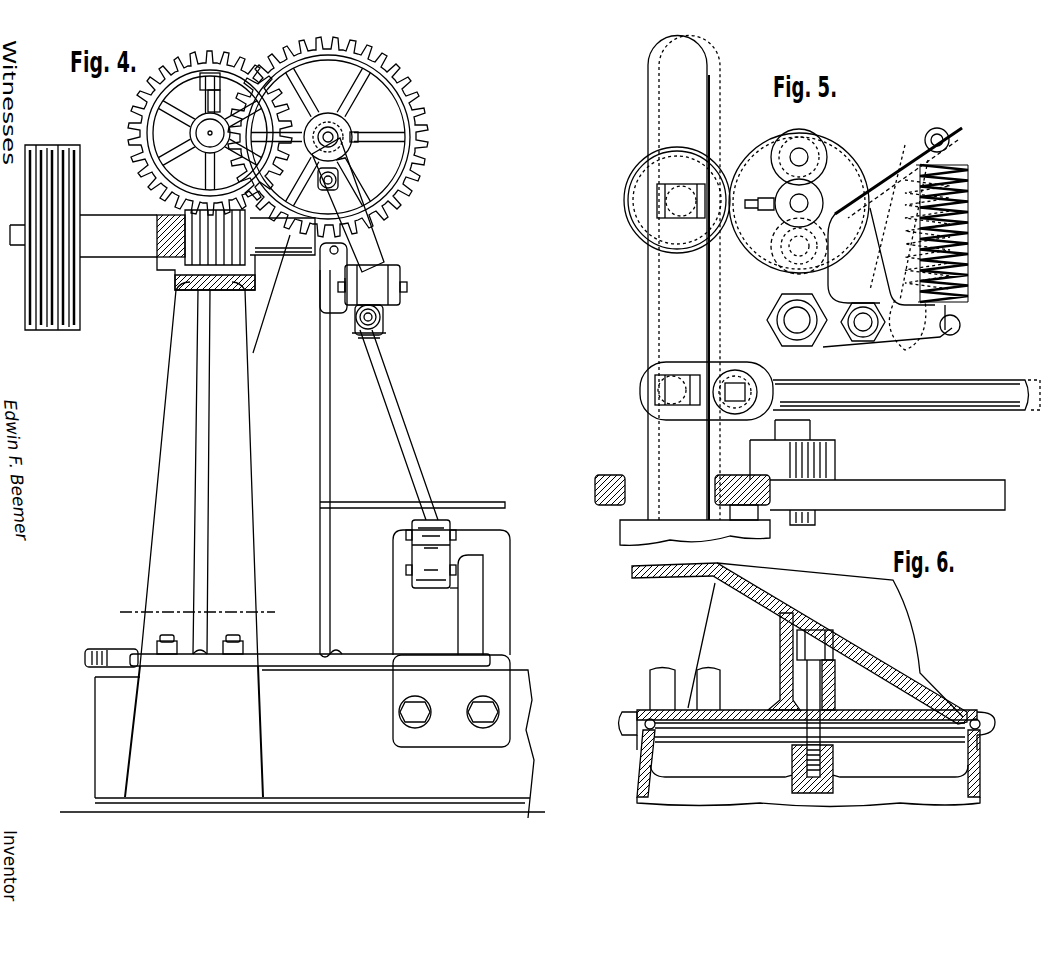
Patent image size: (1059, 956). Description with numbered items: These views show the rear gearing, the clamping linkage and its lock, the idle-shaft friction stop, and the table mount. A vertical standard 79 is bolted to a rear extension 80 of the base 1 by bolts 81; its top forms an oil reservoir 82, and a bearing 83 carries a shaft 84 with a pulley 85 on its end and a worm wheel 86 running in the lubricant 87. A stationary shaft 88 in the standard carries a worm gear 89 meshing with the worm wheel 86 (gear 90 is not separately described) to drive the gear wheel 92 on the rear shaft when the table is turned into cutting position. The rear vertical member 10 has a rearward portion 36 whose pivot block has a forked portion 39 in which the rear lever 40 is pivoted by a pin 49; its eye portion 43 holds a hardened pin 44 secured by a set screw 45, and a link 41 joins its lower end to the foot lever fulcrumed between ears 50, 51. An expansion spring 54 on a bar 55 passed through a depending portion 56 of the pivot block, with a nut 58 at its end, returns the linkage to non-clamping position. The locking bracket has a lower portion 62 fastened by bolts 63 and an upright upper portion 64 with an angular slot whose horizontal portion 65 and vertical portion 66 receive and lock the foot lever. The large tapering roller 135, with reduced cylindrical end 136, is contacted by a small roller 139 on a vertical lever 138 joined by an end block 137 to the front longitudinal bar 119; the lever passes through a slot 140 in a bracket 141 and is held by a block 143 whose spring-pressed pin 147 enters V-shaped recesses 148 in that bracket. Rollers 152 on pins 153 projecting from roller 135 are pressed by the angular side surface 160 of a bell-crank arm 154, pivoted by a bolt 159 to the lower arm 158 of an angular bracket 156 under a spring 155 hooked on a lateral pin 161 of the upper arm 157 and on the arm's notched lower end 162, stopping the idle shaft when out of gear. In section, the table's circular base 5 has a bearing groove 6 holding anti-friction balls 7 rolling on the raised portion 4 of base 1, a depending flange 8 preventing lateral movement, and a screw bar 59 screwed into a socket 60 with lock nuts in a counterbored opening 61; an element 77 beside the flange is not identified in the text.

In FIG. 4, the base 1 is at (302, 744).
In FIG. 6, the base 1 is at (808, 768).
In FIG. 6, the rods 4 is at (965, 740).
In FIG. 4, the plate 5 is at (345, 660).
In FIG. 6, the plate 5 is at (985, 712).
In FIG. 6, the boss 6 is at (622, 722).
In FIG. 6, the lugs 7 is at (975, 712).
In FIG. 4, the bar 8 is at (342, 667).
In FIG. 6, the bar 8 is at (995, 735).
In FIG. 4, the frame 10 is at (268, 450).
In FIG. 6, the frame 10 is at (799, 643).
In FIG. 4, the lever 36 is at (330, 290).
In FIG. 4, the cross head 39 is at (395, 275).
In FIG. 4, the connecting rod 40 is at (405, 418).
In FIG. 4, the clevis 41 is at (412, 568).
In FIG. 4, the crank pin 43 is at (328, 126).
In FIG. 4, the eccentric rod 44 is at (352, 124).
In FIG. 4, the pin 45 is at (358, 136).
In FIG. 4, the screw 49 is at (420, 283).
In FIG. 6, the post 50 is at (655, 675).
In FIG. 6, the post 51 is at (712, 675).
In FIG. 4, the block 54 is at (386, 343).
In FIG. 4, the pivot block 55 is at (385, 326).
In FIG. 4, the bearing 56 is at (362, 333).
In FIG. 4, the pivot pin 58 is at (380, 316).
In FIG. 6, the web 59 is at (807, 688).
In FIG. 6, the nut 60 is at (832, 762).
In FIG. 6, the bolt 61 is at (840, 645).
In FIG. 4, the block 62 is at (451, 701).
In FIG. 4, the bolts 63 is at (483, 712).
In FIG. 4, the bracket 64 is at (451, 592).
In FIG. 4, the pin 65 is at (455, 562).
In FIG. 4, the slot 66 is at (470, 605).
In FIG. 6, the flange 77 is at (626, 730).
In FIG. 4, the column 79 is at (169, 478).
In FIG. 4, the pedestal 80 is at (194, 731).
In FIG. 4, the bolts 81 is at (243, 645).
In FIG. 4, the housing 82 is at (172, 280).
In FIG. 4, the shaft 83 is at (197, 236).
In FIG. 4, the bearing 84 is at (162, 222).
In FIG. 4, the pulley 85 is at (78, 295).
In FIG. 4, the worm 86 is at (196, 250).
In FIG. 4, the oil pan 87 is at (186, 291).
In FIG. 4, the hub 88 is at (197, 126).
In FIG. 4, the spokes 89 is at (172, 132).
In FIG. 4, the gear 90 is at (132, 112).
In FIG. 4, the gear 92 is at (420, 118).
In FIG. 5, the rod 119 is at (995, 388).
In FIG. 5, the disc 135 is at (770, 150).
In FIG. 5, the roller 136 is at (800, 148).
In FIG. 5, the bracket 137 is at (708, 366).
In FIG. 5, the arm 138 is at (684, 277).
In FIG. 5, the wheel 139 is at (648, 210).
In FIG. 5, the block 140 is at (640, 480).
In FIG. 5, the bar 141 is at (877, 472).
In FIG. 5, the base plate 143 is at (632, 528).
In FIG. 5, the block 147 is at (745, 495).
In FIG. 5, the lug 148 is at (765, 507).
In FIG. 5, the roller 152 is at (784, 262).
In FIG. 5, the pin 153 is at (790, 248).
In FIG. 5, the pawl 154 is at (860, 268).
In FIG. 5, the spring 155 is at (970, 222).
In FIG. 5, the roller 156 is at (778, 276).
In FIG. 5, the lever 157 is at (892, 237).
In FIG. 5, the nut 158 is at (813, 335).
In FIG. 5, the nut 159 is at (862, 350).
In FIG. 5, the arm 160 is at (903, 175).
In FIG. 5, the pin 161 is at (950, 135).
In FIG. 5, the pin 162 is at (962, 326).